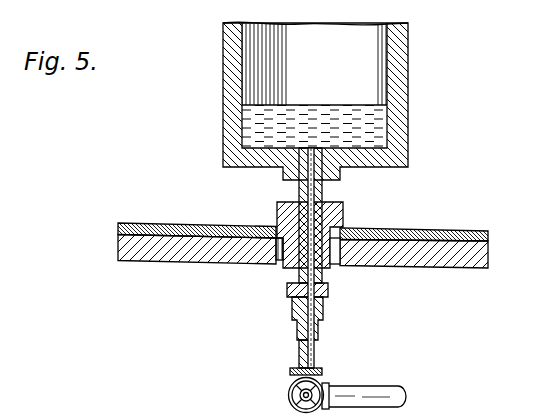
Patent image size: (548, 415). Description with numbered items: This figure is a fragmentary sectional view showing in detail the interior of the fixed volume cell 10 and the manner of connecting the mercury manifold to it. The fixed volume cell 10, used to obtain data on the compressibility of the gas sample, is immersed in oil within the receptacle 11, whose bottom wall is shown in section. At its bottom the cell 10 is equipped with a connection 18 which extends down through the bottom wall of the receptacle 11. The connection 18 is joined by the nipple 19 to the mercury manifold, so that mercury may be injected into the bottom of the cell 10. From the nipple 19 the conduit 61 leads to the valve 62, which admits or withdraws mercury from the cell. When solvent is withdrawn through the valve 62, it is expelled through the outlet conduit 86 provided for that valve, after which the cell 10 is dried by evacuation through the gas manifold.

The fixed volume cell 10 is at (412, 97).
The receptacle 11 is at (433, 231).
The connection 18 is at (298, 190).
The nipple 19 is at (296, 278).
The conduit 61 is at (316, 346).
The valve 62 is at (289, 391).
The outlet conduit 86 is at (384, 398).